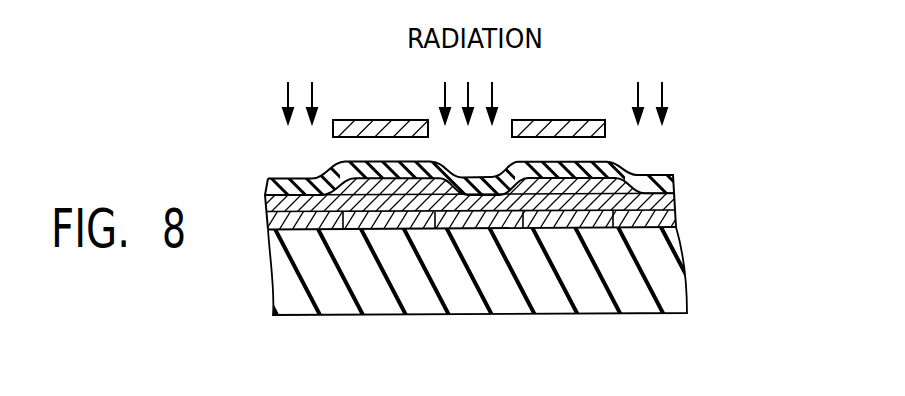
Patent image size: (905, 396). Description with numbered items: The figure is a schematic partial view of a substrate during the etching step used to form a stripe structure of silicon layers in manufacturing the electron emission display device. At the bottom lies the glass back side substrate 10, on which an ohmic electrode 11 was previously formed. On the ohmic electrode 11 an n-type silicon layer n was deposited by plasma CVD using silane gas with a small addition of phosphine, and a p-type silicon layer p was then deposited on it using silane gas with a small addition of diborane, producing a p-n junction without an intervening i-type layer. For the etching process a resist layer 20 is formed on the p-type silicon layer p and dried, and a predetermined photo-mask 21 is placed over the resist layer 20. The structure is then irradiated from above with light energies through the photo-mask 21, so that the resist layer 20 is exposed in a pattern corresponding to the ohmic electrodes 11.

The photo-mask 21 is at (562, 121).
The resist layer 20 is at (666, 180).
The p-type silicon layer p is at (670, 197).
The n-type silicon layer n is at (668, 217).
The back side substrate 10 is at (652, 270).
The ohmic electrode 11 is at (577, 224).